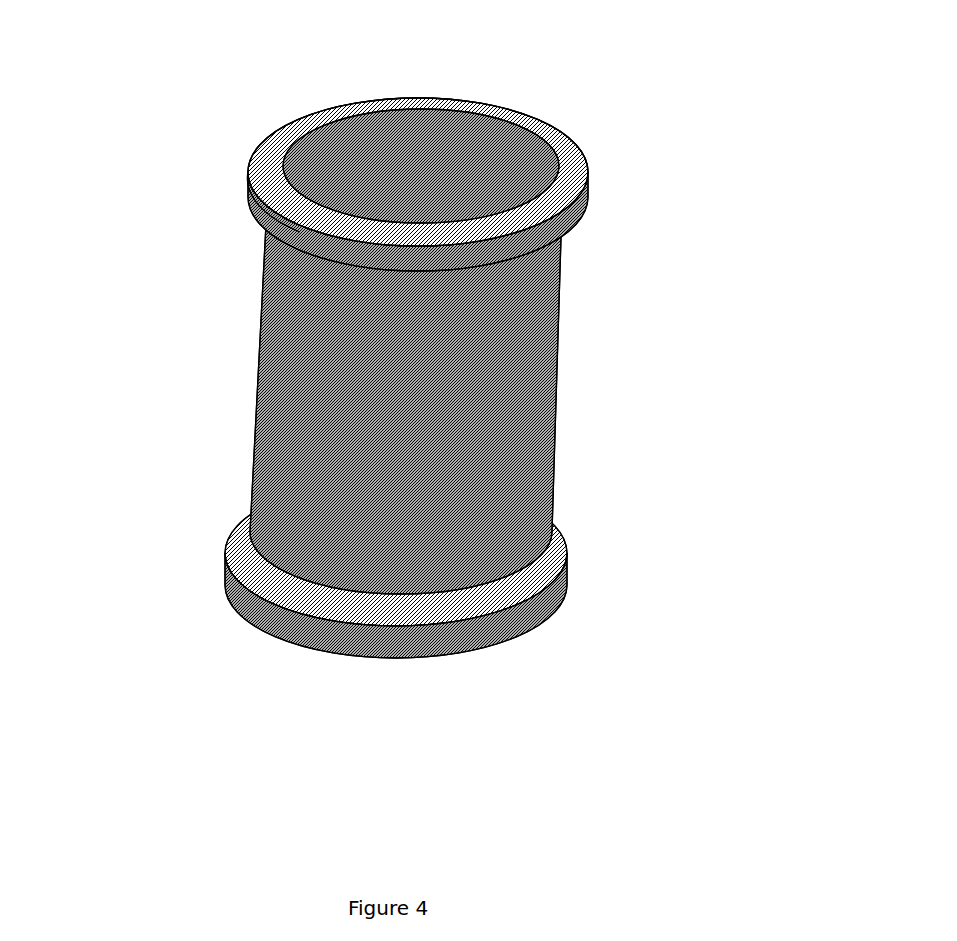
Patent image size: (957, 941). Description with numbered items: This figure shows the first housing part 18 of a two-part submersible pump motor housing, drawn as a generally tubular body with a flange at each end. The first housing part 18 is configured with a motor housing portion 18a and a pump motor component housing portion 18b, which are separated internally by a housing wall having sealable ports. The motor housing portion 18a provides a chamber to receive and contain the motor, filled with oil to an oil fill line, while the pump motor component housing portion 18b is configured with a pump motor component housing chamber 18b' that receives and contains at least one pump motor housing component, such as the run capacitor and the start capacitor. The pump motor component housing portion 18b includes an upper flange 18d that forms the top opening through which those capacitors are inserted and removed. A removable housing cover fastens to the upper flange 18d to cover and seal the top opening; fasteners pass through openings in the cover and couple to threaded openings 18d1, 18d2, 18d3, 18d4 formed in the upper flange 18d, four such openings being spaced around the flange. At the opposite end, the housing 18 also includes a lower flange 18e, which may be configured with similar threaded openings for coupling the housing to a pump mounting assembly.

The first housing part 18 is at (408, 451).
The motor housing portion 18a is at (367, 399).
The pump motor component housing portion 18b is at (478, 399).
The pump motor component housing chamber 18b' is at (456, 126).
The upper flange 18d is at (427, 164).
The threaded opening 18d1 is at (555, 151).
The threaded opening 18d2 is at (358, 107).
The threaded opening 18d3 is at (282, 188).
The threaded opening 18d4 is at (480, 232).
The lower flange 18e is at (255, 598).